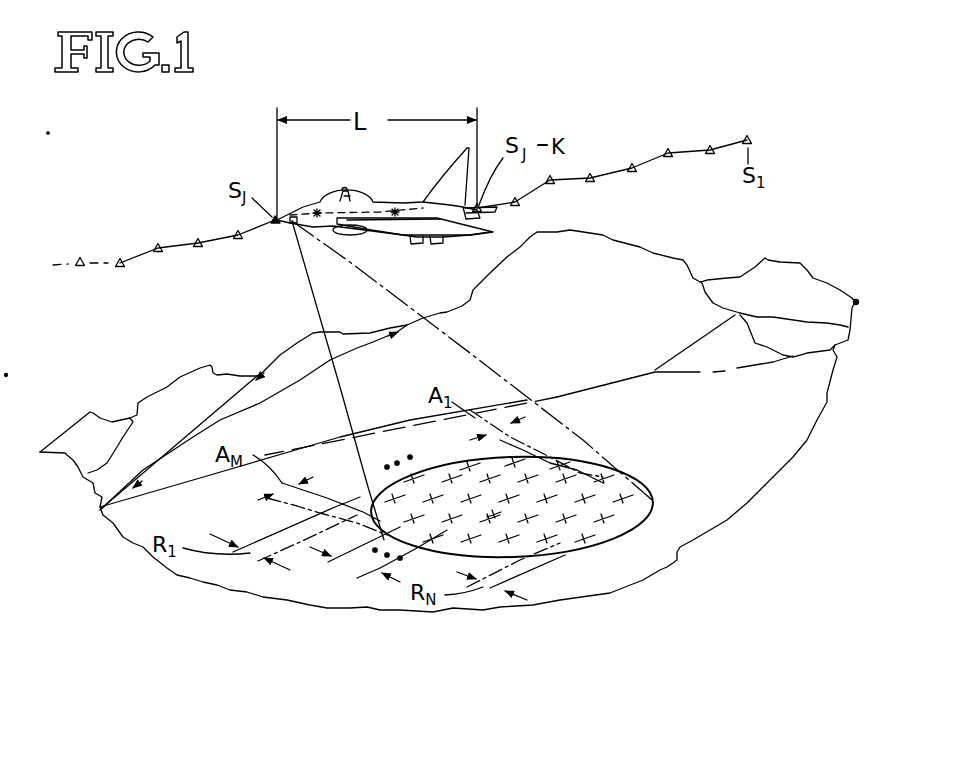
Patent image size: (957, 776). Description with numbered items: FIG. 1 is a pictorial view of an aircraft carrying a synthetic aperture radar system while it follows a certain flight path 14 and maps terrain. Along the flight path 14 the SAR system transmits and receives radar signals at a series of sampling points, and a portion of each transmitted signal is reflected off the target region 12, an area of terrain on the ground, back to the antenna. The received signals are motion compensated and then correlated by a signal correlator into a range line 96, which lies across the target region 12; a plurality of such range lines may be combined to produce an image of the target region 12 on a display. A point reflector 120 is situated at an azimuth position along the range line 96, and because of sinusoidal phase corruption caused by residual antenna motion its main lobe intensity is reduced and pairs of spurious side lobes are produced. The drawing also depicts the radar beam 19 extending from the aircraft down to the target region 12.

The target region 12 is at (647, 472).
The flight path 14 is at (128, 258).
The radar beam center line 19 is at (480, 360).
The range line 96 is at (350, 560).
The point reflector 120 is at (487, 518).